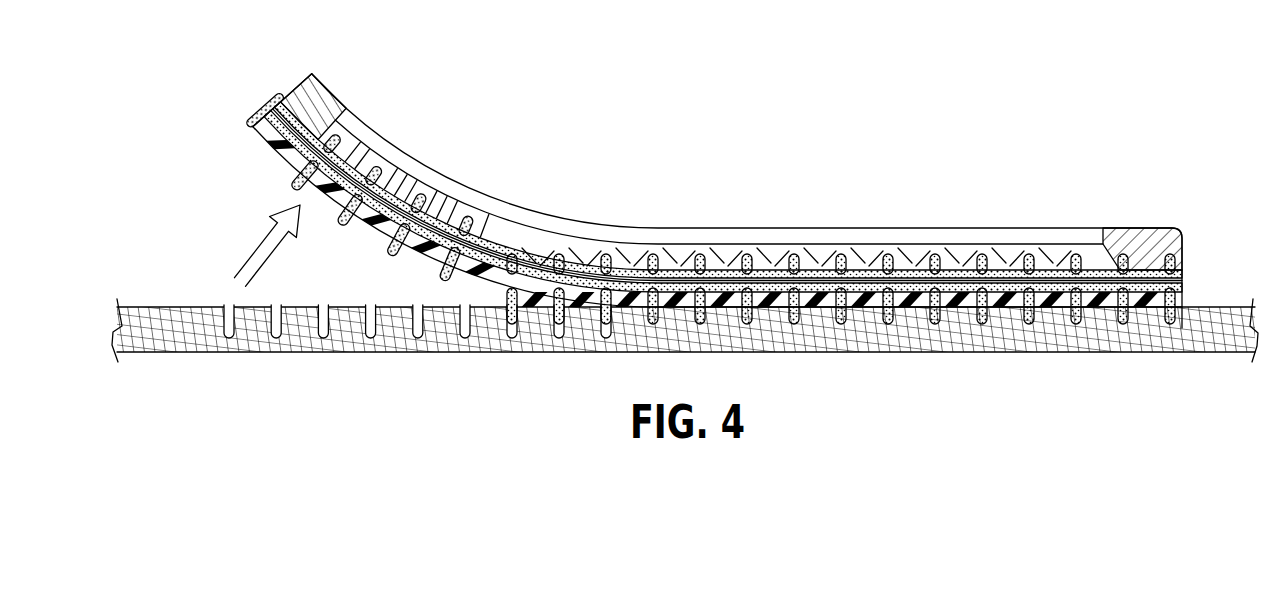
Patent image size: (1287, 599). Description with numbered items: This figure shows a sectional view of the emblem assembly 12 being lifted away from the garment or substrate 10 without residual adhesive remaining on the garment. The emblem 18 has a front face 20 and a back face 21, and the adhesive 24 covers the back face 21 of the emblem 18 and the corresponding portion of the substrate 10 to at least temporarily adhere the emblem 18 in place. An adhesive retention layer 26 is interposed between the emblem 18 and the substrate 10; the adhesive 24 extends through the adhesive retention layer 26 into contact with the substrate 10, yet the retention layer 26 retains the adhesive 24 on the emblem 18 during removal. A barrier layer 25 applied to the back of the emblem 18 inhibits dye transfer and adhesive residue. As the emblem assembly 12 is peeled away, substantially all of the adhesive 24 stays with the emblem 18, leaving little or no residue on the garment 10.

The garment or substrate 10 is at (1223, 304).
The emblem assembly 12 is at (677, 181).
The emblem 18 is at (474, 186).
The front face 20 is at (394, 160).
The back face 21 is at (392, 206).
The adhesive 24 is at (278, 112).
The barrier layer 25 is at (270, 115).
The adhesive retention layer 26 is at (266, 138).